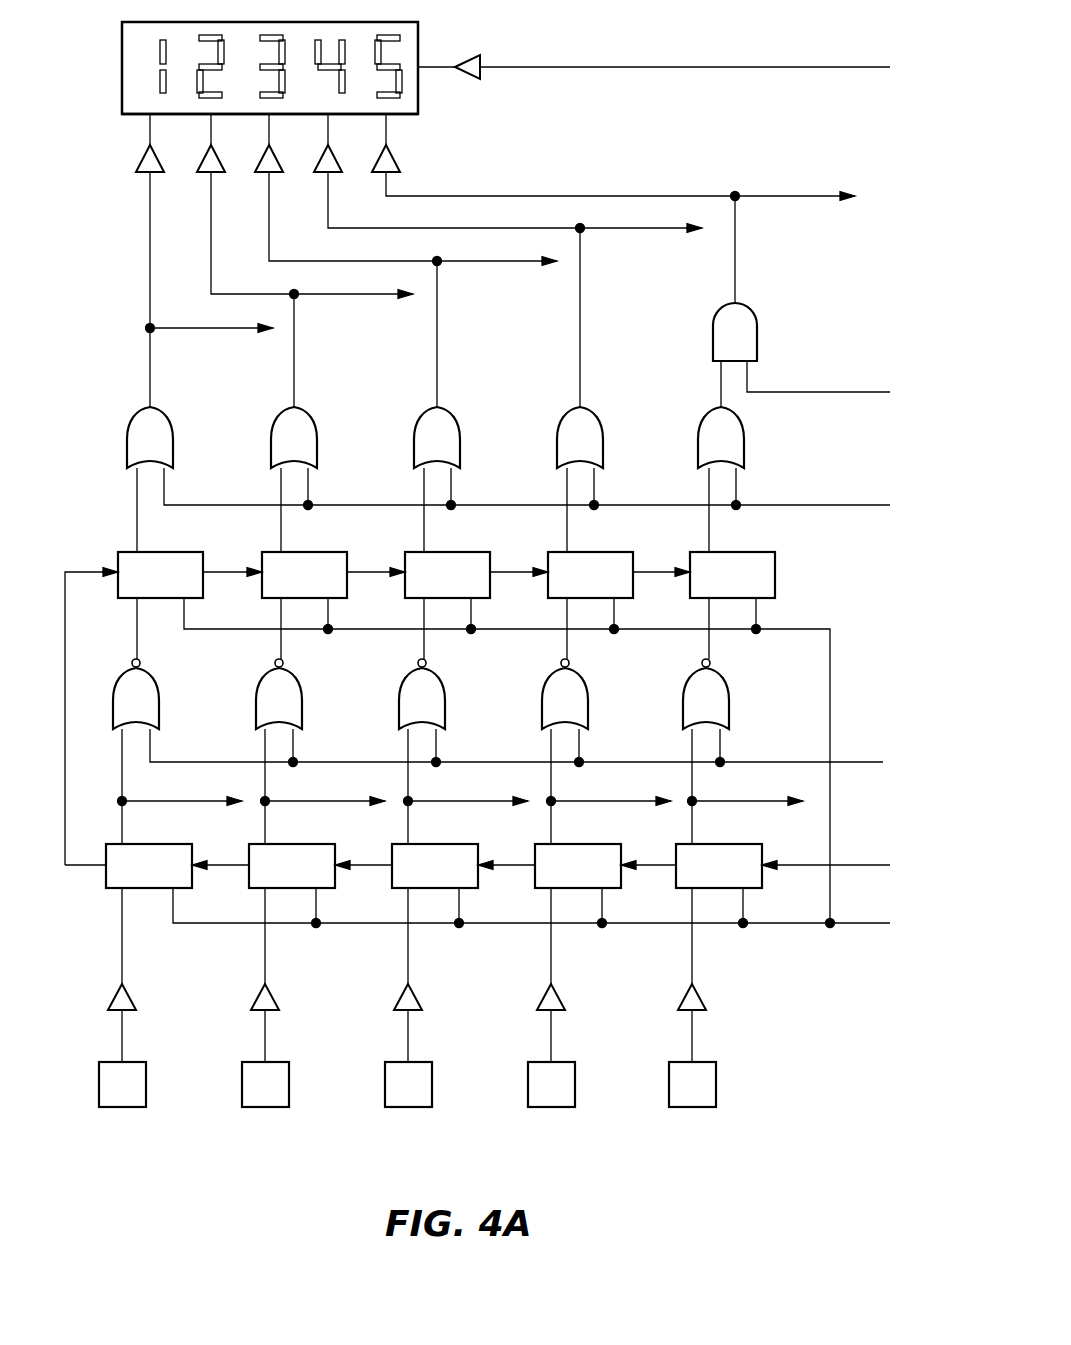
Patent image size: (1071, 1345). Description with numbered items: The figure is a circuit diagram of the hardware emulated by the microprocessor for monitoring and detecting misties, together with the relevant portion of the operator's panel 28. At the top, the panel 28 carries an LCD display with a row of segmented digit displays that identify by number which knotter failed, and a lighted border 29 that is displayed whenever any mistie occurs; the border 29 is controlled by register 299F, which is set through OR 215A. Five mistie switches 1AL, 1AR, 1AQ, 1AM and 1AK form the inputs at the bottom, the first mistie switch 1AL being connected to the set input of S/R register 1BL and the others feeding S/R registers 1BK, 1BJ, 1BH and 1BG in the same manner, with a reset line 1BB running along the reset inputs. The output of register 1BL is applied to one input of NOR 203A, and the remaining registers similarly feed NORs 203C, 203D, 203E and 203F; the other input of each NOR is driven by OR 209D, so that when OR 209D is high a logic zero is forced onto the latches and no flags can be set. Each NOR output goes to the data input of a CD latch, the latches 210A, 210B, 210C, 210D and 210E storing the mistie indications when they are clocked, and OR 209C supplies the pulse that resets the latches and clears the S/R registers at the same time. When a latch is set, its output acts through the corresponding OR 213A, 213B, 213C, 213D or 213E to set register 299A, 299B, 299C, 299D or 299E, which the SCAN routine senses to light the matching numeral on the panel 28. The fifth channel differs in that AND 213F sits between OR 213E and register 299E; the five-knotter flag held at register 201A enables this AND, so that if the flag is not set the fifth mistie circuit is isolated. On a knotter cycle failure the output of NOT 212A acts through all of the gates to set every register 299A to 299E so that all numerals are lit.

The operator's panel 28 is at (412, 36).
The lighted border 29 is at (418, 104).
The register 299A is at (138, 160).
The register 299B is at (199, 160).
The register 299C is at (257, 160).
The register 299D is at (316, 160).
The register 299E is at (374, 160).
The register 299F is at (478, 58).
The OR 215A is at (831, 67).
The OR 213A is at (234, 319).
The OR 213B is at (360, 294).
The OR 213C is at (500, 261).
The OR 213D is at (641, 228).
The OR 213E is at (797, 196).
The AND 213F is at (757, 320).
The register 201A is at (828, 392).
The NOT 212A is at (830, 505).
The CD latch 210A is at (177, 552).
The CD latch 210B is at (321, 552).
The CD latch 210C is at (464, 552).
The CD latch 210D is at (607, 552).
The CD latch 210E is at (749, 552).
The NOR 203A is at (157, 684).
The NOR 203C is at (300, 684).
The NOR 203D is at (443, 684).
The NOR 203E is at (586, 684).
The NOR 203F is at (727, 684).
The OR 209D is at (882, 768).
The OR 209C is at (843, 910).
The S/R register 1BL is at (177, 801).
The S/R register 1BK is at (320, 801).
The S/R register 1BJ is at (463, 801).
The S/R register 1BH is at (606, 801).
The S/R register 1BG is at (747, 801).
The reset signal line 1BB is at (826, 859).
The mistie switch 1AL is at (122, 997).
The input signal 1AR is at (265, 997).
The input signal 1AQ is at (408, 997).
The input signal 1AM is at (551, 997).
The mistie switch 1AK is at (692, 997).